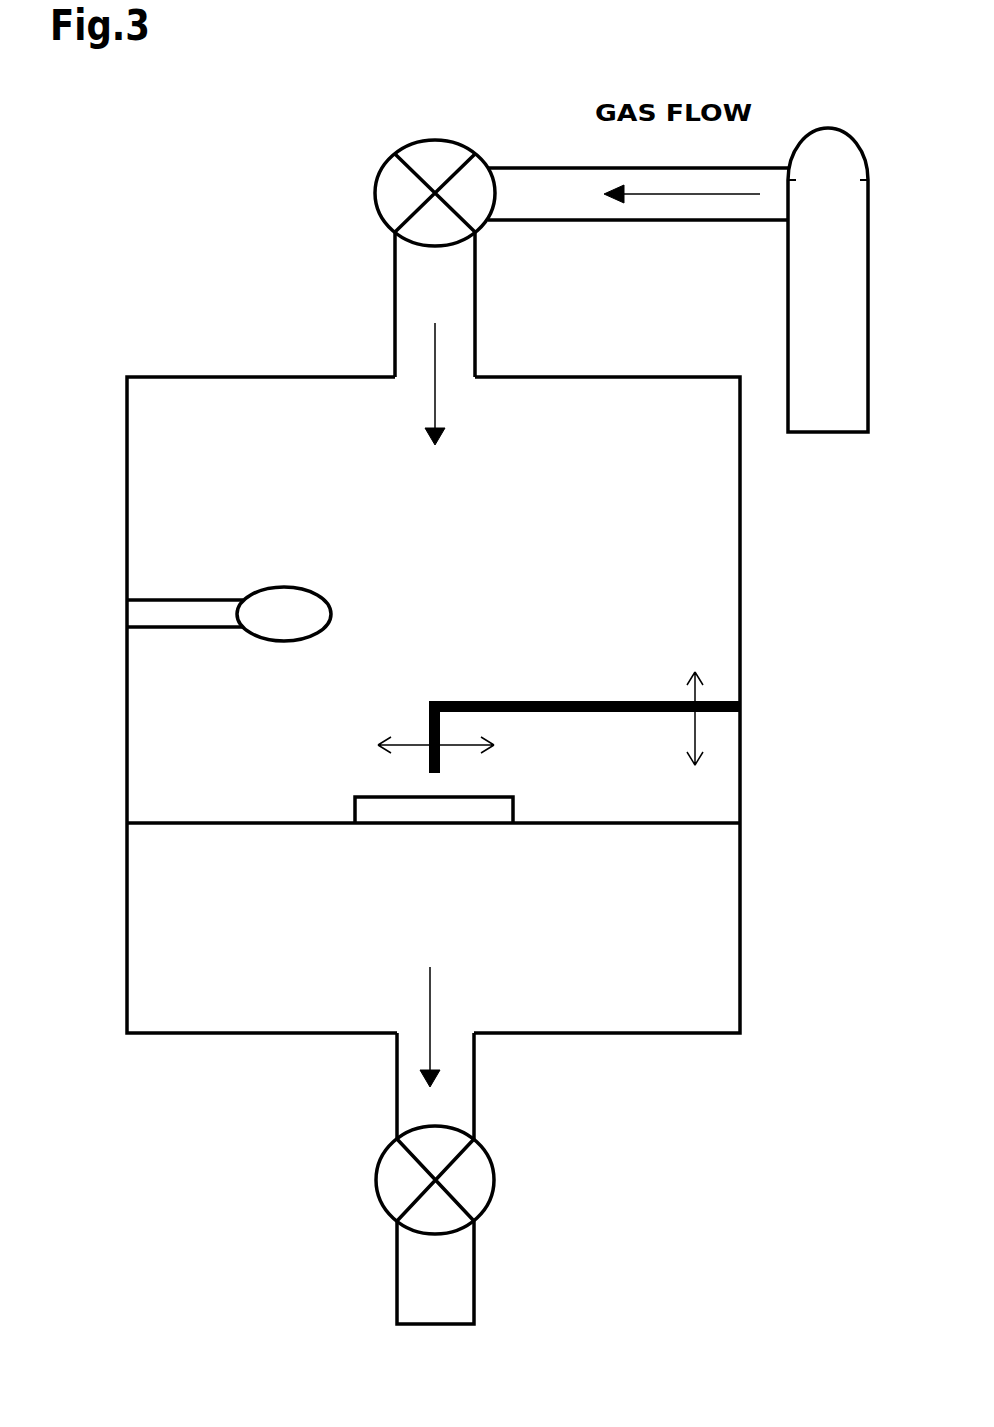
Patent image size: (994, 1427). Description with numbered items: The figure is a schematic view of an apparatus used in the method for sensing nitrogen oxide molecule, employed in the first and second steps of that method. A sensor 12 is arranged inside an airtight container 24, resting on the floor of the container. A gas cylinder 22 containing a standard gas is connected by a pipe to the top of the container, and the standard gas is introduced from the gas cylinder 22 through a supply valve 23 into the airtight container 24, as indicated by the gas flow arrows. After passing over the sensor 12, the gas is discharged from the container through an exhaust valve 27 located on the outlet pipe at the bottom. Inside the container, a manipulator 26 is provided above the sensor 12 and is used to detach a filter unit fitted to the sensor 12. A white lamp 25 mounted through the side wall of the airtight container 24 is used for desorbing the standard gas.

The sensor 12 is at (382, 785).
The gas cylinder 22 is at (815, 128).
The supply valve 23 is at (383, 167).
The airtight container 24 is at (200, 377).
The white lamp 25 is at (277, 587).
The manipulator 26 is at (553, 702).
The exhaust valve 27 is at (410, 1180).